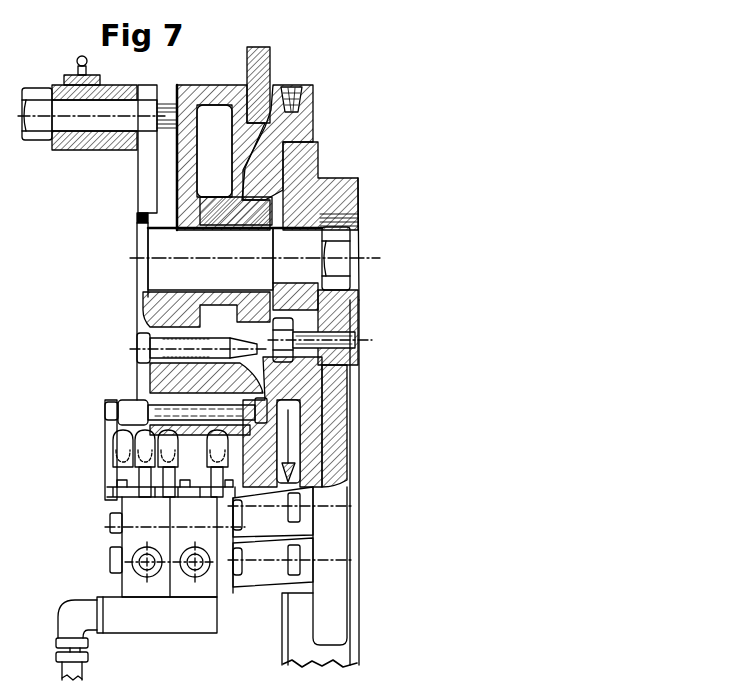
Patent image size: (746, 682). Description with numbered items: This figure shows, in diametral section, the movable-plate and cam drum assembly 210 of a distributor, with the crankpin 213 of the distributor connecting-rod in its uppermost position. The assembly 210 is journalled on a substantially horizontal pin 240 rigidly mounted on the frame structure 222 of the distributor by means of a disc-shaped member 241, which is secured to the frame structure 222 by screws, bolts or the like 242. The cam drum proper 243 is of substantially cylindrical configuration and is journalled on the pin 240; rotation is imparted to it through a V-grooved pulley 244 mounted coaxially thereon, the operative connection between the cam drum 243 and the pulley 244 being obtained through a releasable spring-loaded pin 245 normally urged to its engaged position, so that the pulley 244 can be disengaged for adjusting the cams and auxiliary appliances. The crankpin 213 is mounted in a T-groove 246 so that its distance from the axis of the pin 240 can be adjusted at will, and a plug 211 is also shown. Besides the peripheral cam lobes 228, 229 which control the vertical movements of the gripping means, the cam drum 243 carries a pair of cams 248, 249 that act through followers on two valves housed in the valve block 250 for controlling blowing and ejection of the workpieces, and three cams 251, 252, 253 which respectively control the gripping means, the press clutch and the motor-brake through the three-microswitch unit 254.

The movable-plate and cam drum assembly 210 is at (186, 82).
The plug 211 is at (297, 87).
The crankpin 213 is at (56, 152).
The frame structure 222 is at (348, 428).
The peripheral cam lobe 228 is at (255, 470).
The peripheral cam lobe 229 is at (263, 58).
The horizontal pin 240 is at (160, 263).
The disc-shaped member 241 is at (297, 202).
The screws 242 is at (333, 338).
The cam drum 243 is at (167, 310).
The V-grooved pulley 244 is at (303, 123).
The releasable spring-loaded pin 245 is at (142, 372).
The T-groove 246 is at (143, 187).
The cam 248 is at (118, 467).
The cam 249 is at (123, 500).
The valve block 250 is at (118, 581).
The cam 251 is at (115, 458).
The cam 252 is at (143, 433).
The cam 253 is at (200, 462).
The three-microswitch unit 254 is at (110, 442).